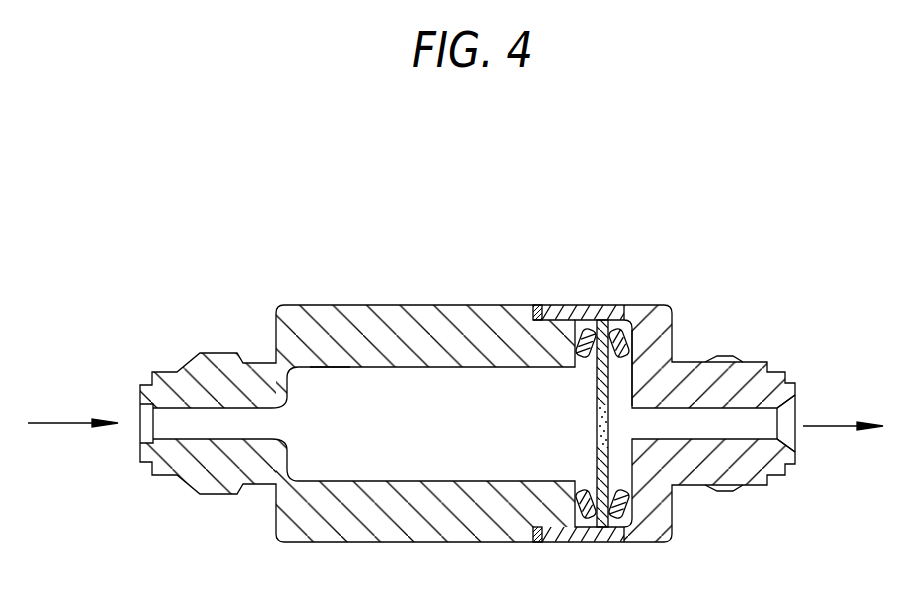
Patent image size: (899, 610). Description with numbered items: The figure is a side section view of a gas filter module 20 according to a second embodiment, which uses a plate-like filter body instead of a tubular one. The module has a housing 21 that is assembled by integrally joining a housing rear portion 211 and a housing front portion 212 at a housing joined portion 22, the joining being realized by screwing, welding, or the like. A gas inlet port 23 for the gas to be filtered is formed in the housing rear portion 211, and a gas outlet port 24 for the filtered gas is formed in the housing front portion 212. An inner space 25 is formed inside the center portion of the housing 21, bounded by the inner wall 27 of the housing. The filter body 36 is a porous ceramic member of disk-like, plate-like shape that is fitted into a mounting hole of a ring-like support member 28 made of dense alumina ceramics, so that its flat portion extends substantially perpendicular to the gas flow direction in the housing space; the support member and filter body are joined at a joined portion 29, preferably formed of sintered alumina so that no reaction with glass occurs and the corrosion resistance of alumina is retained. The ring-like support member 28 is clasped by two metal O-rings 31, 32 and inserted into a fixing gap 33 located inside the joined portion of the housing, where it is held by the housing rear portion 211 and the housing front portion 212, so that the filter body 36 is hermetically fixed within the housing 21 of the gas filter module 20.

The gas filter module 20 is at (466, 296).
The housing 21 is at (410, 323).
The rear portion of the housing 211 is at (286, 316).
The front portion of the housing 212 is at (663, 306).
The housing joined portion 22 is at (540, 305).
The gas inlet port 23 is at (140, 415).
The gas outlet port 24 is at (790, 420).
The inner space 25 is at (305, 409).
The inner wall 27 is at (328, 370).
The ring-like support member 28 is at (522, 335).
The joined portion 29 is at (597, 444).
The metal O-ring 31 is at (583, 328).
The metal O-ring 32 is at (622, 323).
The fixing gap 33 is at (618, 370).
The filter body 36 is at (597, 425).